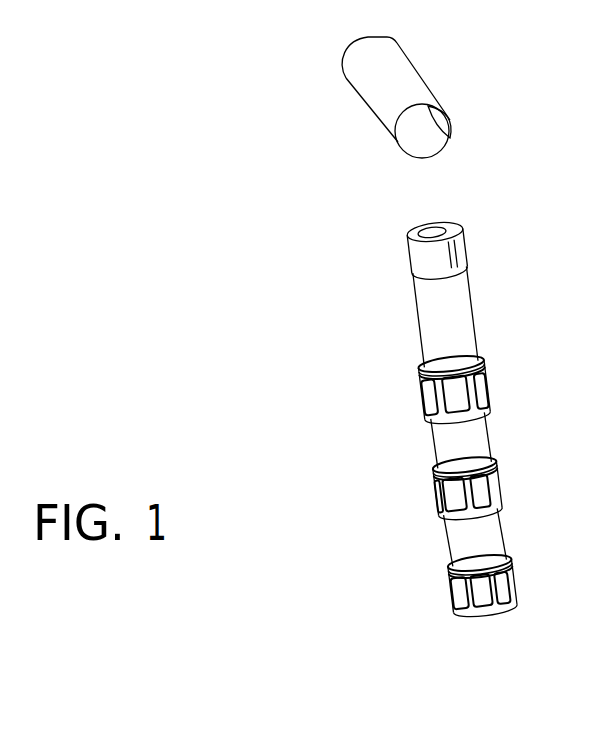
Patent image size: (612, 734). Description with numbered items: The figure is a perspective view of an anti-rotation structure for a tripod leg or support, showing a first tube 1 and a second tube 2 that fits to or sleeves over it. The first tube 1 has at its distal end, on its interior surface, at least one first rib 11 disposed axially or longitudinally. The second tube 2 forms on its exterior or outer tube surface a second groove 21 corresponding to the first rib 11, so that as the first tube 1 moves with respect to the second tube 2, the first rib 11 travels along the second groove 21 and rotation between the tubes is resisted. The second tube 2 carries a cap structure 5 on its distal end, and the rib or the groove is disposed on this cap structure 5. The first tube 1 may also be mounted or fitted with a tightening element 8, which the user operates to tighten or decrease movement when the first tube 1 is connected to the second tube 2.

The first tube 1 is at (375, 93).
The first rib 11 is at (440, 122).
The second tube 2 is at (430, 308).
The cap structure 5 is at (458, 247).
The second groove 21 is at (464, 270).
The tightening element 8 is at (488, 390).